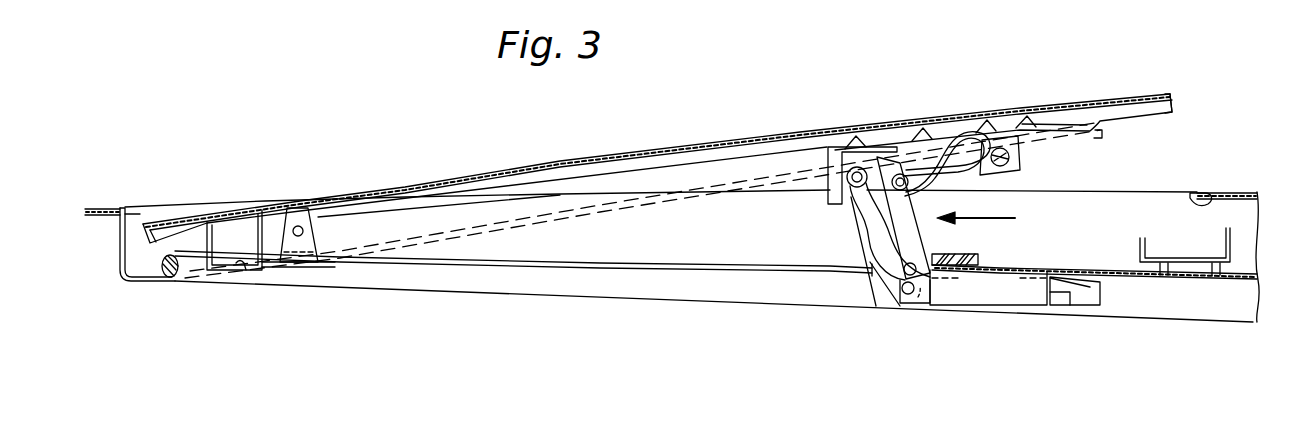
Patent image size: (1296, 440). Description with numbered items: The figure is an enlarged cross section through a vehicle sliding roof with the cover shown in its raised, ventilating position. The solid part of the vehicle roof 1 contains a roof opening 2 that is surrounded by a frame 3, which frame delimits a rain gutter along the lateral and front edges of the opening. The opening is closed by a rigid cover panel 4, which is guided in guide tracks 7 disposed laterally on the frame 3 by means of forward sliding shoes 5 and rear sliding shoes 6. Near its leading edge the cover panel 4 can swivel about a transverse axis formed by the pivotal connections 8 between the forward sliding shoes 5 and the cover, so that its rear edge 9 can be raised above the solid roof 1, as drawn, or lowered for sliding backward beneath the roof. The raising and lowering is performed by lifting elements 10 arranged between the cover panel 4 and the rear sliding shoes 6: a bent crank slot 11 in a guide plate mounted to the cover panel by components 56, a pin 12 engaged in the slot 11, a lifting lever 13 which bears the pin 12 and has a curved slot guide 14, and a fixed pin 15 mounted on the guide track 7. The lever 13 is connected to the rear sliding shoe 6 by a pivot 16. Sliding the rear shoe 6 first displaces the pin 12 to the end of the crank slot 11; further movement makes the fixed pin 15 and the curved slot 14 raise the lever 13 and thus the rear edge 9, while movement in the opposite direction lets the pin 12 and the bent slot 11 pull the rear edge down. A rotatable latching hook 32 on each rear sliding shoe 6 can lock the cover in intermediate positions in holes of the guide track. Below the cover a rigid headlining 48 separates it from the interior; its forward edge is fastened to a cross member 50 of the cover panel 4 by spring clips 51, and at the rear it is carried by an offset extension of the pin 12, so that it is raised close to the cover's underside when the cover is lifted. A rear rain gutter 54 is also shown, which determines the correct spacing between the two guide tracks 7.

The solid part of the vehicle roof 1 is at (1237, 192).
The roof opening 2 is at (1192, 192).
The frame 3 is at (142, 280).
The cover panel 4 is at (622, 152).
The forward sliding shoes 5 is at (293, 268).
The rear sliding shoes 6 is at (972, 254).
The guide tracks 7 is at (1002, 282).
The pivotal connections 8 is at (298, 208).
The rear edge 9 is at (1176, 97).
The lifting elements 10 is at (992, 218).
The crank slot 11 is at (962, 150).
The pin 12 is at (899, 174).
The lifting lever 13 is at (861, 204).
The slot guide 14 is at (887, 257).
The pin 15 is at (925, 282).
The pivot 16 is at (905, 296).
The latching hook 32 is at (1078, 290).
The headlining 48 is at (525, 232).
The cross member 50 is at (228, 222).
The spring clips 51 is at (240, 272).
The rear rain gutter 54 is at (1185, 266).
The components which support crank slot 56 is at (846, 140).